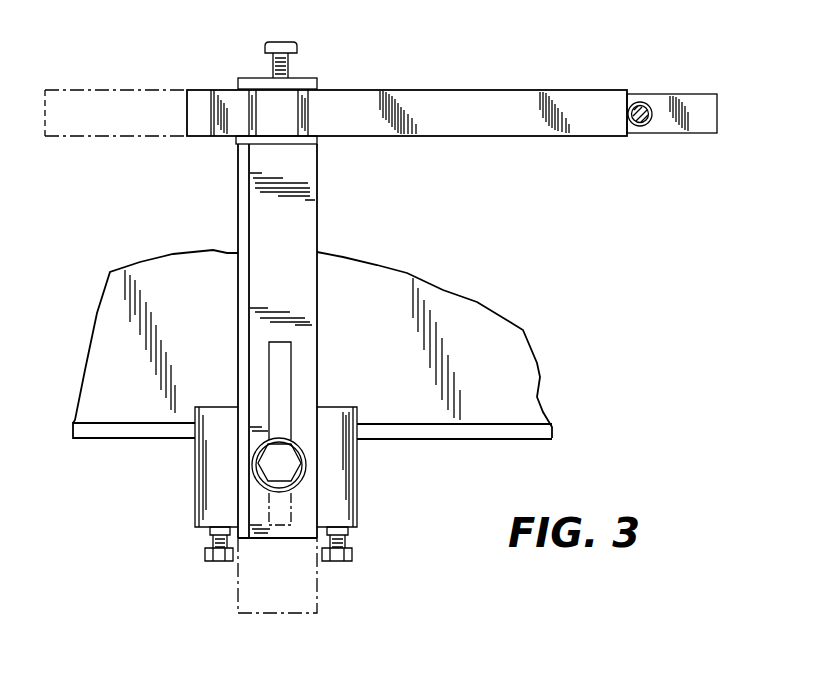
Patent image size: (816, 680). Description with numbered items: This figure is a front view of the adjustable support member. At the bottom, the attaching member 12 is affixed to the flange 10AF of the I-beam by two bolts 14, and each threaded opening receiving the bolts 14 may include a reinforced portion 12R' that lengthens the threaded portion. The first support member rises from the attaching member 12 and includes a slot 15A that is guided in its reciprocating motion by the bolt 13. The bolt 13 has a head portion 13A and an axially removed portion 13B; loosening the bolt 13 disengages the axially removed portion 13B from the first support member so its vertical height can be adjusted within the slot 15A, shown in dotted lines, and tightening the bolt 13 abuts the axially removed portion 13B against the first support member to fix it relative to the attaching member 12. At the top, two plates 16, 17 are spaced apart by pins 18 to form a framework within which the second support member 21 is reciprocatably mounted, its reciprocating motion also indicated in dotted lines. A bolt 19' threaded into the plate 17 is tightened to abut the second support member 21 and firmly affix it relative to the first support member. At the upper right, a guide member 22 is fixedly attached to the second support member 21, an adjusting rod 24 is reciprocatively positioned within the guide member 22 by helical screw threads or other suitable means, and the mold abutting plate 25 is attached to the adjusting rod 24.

The flange 10AF is at (113, 430).
The attaching member 12 is at (193, 480).
The reinforced portion 12R' is at (281, 547).
The bolt 13 is at (312, 438).
The head portion 13A is at (282, 467).
The axially removed portion 13B is at (304, 460).
The bolts 14 is at (218, 562).
The slot 15A is at (283, 383).
The plate 16 is at (307, 138).
The plate 17 is at (303, 80).
The pins 18 is at (306, 108).
The bolt 19' is at (300, 46).
The second support member 21 is at (477, 103).
The guide member 22 is at (644, 124).
The adjusting rod 24 is at (638, 102).
The mold abutting plate 25 is at (712, 105).